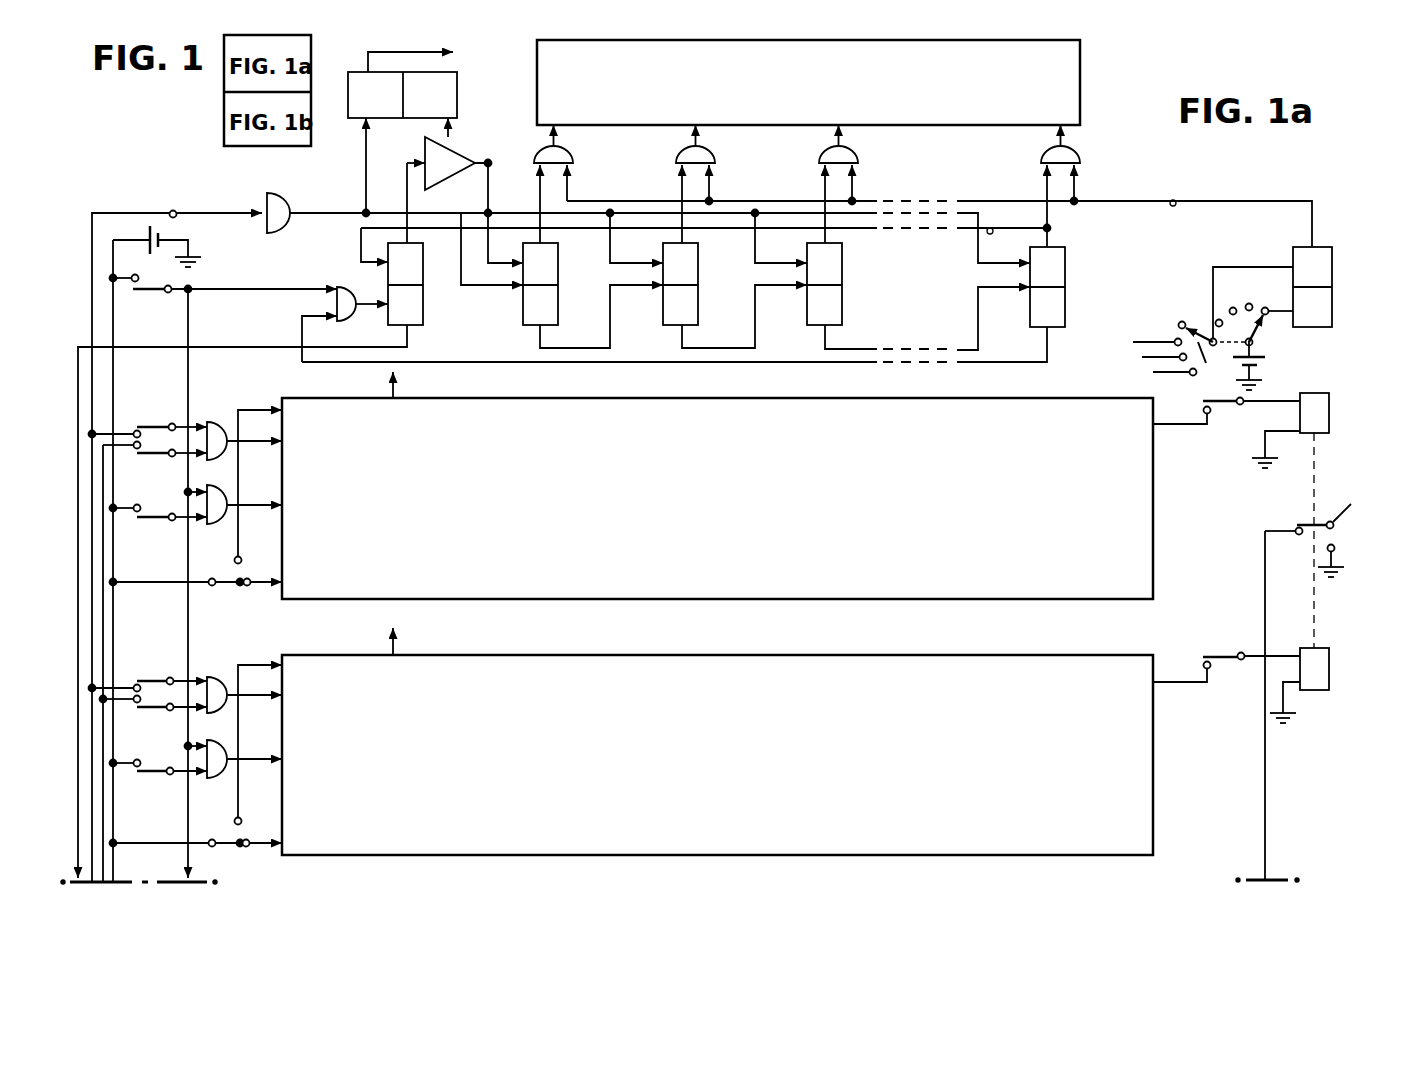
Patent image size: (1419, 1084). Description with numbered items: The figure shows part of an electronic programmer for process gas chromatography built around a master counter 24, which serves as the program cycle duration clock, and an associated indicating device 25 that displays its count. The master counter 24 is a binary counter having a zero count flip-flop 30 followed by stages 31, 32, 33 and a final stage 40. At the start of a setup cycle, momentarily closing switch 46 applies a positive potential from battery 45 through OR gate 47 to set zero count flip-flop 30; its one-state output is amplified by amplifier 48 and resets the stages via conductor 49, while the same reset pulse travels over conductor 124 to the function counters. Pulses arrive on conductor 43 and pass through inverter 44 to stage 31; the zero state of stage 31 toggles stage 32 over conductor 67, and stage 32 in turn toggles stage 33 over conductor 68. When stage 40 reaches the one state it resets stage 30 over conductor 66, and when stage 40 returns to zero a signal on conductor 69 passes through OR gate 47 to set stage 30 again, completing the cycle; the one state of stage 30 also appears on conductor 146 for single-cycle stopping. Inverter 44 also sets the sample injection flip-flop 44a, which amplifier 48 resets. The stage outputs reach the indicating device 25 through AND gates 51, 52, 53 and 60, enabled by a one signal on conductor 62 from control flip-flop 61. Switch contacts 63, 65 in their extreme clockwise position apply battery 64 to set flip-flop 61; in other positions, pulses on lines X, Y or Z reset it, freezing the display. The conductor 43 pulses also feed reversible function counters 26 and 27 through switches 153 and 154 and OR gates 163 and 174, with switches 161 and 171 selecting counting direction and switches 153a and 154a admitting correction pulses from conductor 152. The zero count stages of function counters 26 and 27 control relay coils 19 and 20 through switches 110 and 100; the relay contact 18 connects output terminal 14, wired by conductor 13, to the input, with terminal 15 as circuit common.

The conductor 13 is at (1264, 755).
The output terminal 14 is at (1361, 514).
The circuit common terminal 15 is at (1334, 552).
The switching contact 18 is at (1305, 523).
The energizing coil 19 is at (1332, 420).
The energizing coil 20 is at (1332, 661).
The master counter 24 is at (820, 174).
The indicating device 25 is at (808, 82).
The function counter 26 is at (717, 482).
The function counter 27 is at (717, 739).
The zero count flip-flop 30 is at (425, 307).
The counter stage 31 is at (560, 307).
The counter stage 32 is at (700, 307).
The counter stage 33 is at (844, 307).
The counter stage 40 is at (1067, 310).
The conductor 43 is at (170, 212).
The inverter 44 is at (290, 200).
The sample injection flip-flop 44a is at (347, 110).
The battery 45 is at (160, 225).
The reset switch 46 is at (153, 292).
The OR gate 47 is at (352, 283).
The amplifier 48 is at (457, 142).
The conductor 49 is at (787, 217).
The AND gate 51 is at (571, 148).
The AND gate 52 is at (713, 148).
The AND gate 53 is at (856, 148).
The AND gate 60 is at (1080, 152).
The control flip-flop 61 is at (1332, 307).
The conductor 62 is at (1173, 200).
The switch contact 63 is at (1258, 328).
The battery 64 is at (1260, 362).
The switch contact 65 is at (1176, 354).
The conductor 66 is at (990, 227).
The conductor 67 is at (607, 308).
The conductor 68 is at (752, 308).
The conductor 69 is at (712, 358).
The switch 100 is at (1230, 650).
The switch 110 is at (1225, 412).
The conductor 124 is at (190, 598).
The conductor 146 is at (253, 348).
The conductor 152 is at (103, 553).
The switch 153 is at (157, 423).
The switch 153a is at (155, 456).
The switch 154 is at (157, 678).
The switch 154a is at (155, 709).
The switch 161 is at (225, 585).
The OR gate 163 is at (225, 422).
The switch 171 is at (223, 847).
The OR gate 174 is at (225, 677).